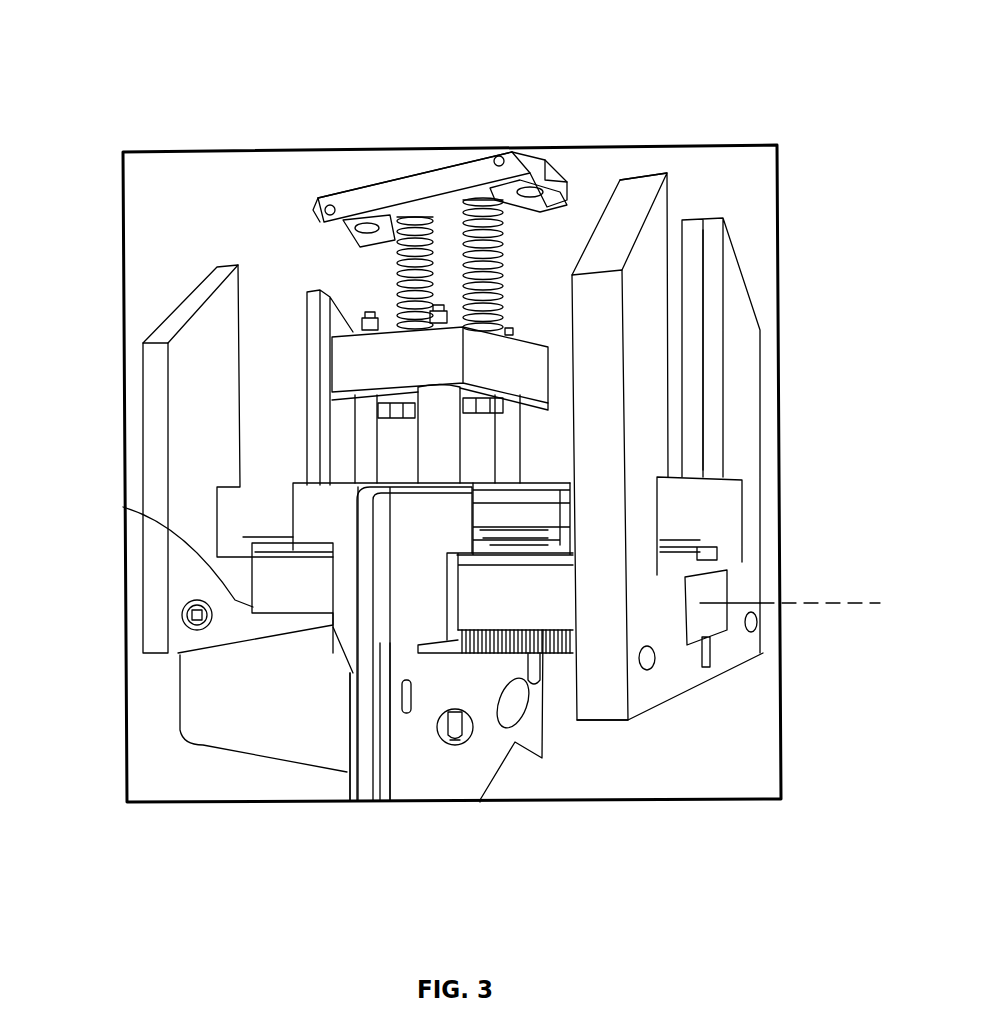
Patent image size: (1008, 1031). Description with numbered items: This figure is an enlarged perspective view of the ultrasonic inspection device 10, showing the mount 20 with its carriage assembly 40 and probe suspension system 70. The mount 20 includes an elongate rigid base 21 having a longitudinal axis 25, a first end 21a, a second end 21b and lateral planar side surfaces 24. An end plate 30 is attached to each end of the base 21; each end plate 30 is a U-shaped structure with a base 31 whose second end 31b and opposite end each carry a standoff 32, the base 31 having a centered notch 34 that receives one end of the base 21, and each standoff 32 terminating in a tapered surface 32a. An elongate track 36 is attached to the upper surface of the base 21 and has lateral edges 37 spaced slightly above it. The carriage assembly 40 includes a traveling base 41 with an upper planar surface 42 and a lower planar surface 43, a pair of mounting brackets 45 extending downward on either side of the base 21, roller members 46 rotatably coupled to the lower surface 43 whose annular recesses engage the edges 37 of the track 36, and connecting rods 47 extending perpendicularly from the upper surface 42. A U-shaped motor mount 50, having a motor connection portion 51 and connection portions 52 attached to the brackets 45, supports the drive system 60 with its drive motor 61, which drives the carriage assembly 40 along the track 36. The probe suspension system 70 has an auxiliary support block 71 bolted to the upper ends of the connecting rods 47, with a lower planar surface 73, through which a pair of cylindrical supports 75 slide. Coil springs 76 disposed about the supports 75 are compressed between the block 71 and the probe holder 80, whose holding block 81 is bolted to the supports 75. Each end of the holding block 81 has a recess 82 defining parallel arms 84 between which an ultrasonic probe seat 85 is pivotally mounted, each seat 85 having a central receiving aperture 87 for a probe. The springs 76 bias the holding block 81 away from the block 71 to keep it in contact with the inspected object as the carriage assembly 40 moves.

The cutting apparatus 10 is at (226, 45).
The mount 20 is at (737, 328).
The base 21 is at (455, 780).
The lateral planar side surfaces 24 is at (455, 726).
The first end 21a is at (715, 588).
The second end 21b is at (267, 577).
The longitudinal axis 25 is at (800, 607).
The end plate 30 is at (230, 310).
The base 31 is at (680, 675).
The second end 31b is at (182, 612).
The standoffs 32 is at (647, 225).
The tapered surface 32a is at (637, 190).
The notch 34 is at (737, 603).
The track 36 is at (712, 550).
The edges 37 is at (693, 550).
The carriage assembly 40 is at (286, 470).
The traveling base 41 is at (543, 493).
The upper planar surface 42 is at (557, 472).
The lower planar surface 43 is at (520, 540).
The mounting brackets 45 is at (430, 583).
The roller members 46 is at (483, 538).
The connecting rods 47 is at (507, 417).
The motor mount 50 is at (442, 684).
The motor connection portion 51 is at (423, 770).
The connection portions 52 is at (383, 643).
The drive system 60 is at (496, 792).
The drive motor 61 is at (235, 750).
The probe suspension system 70 is at (577, 204).
The auxiliary support block 71 is at (533, 350).
The lower planar surface 73 is at (403, 393).
The cylindrical supports 75 is at (397, 287).
The coil springs 76 is at (433, 217).
The probe holder 80 is at (438, 149).
The holding block 81 is at (424, 187).
The recess 82 is at (593, 248).
The arms 84 is at (333, 193).
The ultrasonic probe seats 85 is at (539, 179).
The receiving aperture 87 is at (363, 230).